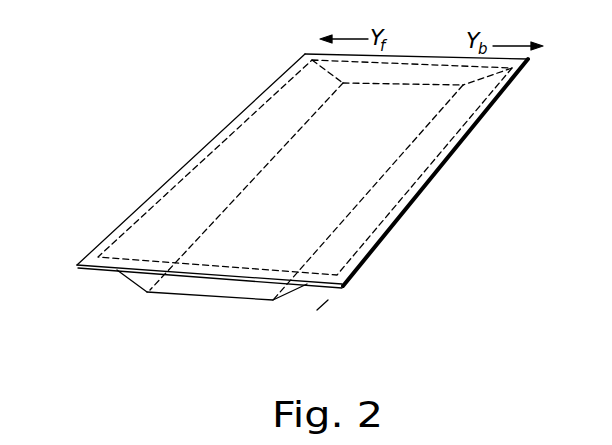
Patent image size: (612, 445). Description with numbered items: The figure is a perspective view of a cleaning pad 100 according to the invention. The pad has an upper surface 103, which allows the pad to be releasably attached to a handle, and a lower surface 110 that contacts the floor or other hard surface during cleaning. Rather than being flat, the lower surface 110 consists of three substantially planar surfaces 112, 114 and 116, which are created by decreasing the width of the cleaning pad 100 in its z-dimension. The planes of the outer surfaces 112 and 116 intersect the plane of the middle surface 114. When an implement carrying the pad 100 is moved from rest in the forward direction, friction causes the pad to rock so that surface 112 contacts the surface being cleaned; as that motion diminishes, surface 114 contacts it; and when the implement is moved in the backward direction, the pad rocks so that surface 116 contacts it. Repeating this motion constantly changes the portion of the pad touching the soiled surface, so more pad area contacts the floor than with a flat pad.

The cleaning pad 100 is at (217, 120).
The upper surface 103 is at (343, 197).
The lower surface 110 is at (261, 233).
The planar surface 112 is at (128, 281).
The planar surface 114 is at (212, 297).
The planar surface 116 is at (323, 316).